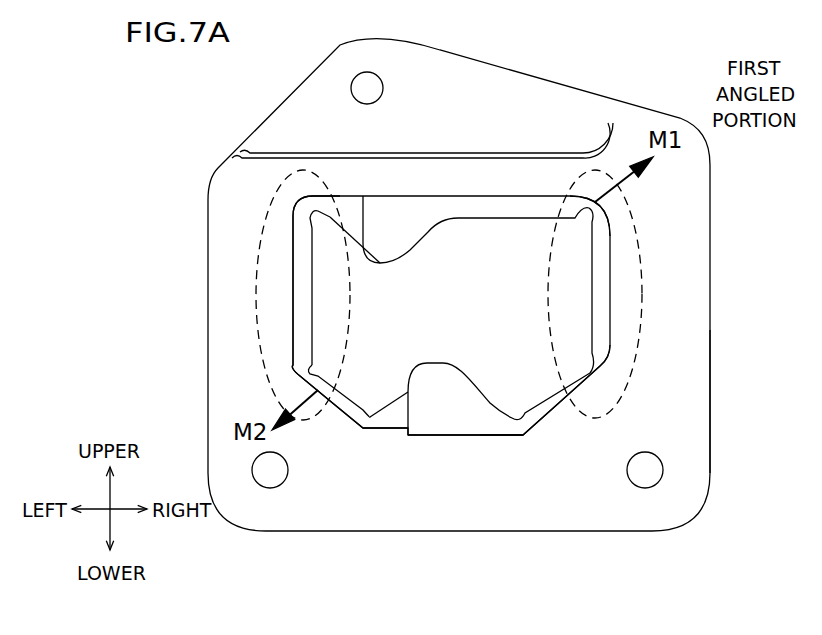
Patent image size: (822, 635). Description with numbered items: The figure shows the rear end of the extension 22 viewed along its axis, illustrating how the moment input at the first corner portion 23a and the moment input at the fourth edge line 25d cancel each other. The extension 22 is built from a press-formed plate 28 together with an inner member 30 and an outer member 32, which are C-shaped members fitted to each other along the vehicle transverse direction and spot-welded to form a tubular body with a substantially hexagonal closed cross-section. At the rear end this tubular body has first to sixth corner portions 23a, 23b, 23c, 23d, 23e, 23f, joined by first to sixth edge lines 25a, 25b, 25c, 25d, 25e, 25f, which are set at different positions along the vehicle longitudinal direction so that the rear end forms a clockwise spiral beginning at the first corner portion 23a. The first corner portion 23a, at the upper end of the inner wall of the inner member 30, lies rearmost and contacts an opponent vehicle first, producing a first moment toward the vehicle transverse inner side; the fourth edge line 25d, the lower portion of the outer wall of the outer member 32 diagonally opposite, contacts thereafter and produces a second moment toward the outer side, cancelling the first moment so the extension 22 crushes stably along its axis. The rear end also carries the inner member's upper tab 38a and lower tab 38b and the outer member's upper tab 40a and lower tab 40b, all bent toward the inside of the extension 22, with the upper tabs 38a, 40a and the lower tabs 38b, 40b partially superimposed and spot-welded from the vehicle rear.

The extension 22 is at (607, 70).
The plate 28 is at (717, 357).
The inner member 30 is at (613, 265).
The outer member 32 is at (292, 278).
The first corner portion 23a is at (607, 213).
The second corner portion 23b is at (600, 373).
The third corner portion 23c is at (523, 432).
The fourth corner portion 23d is at (362, 430).
The fifth corner portion 23e is at (306, 374).
The sixth corner portion 23f is at (303, 210).
The first edge line 25a is at (600, 297).
The second edge line 25b is at (560, 417).
The third edge line 25c is at (457, 430).
The fourth edge line 25d is at (323, 400).
The fifth edge line 25e is at (297, 318).
The sixth edge line 25f is at (447, 207).
The upper tab 38a is at (396, 249).
The lower tab 38b is at (468, 382).
The upper tab 40a is at (352, 240).
The lower tab 40b is at (393, 400).